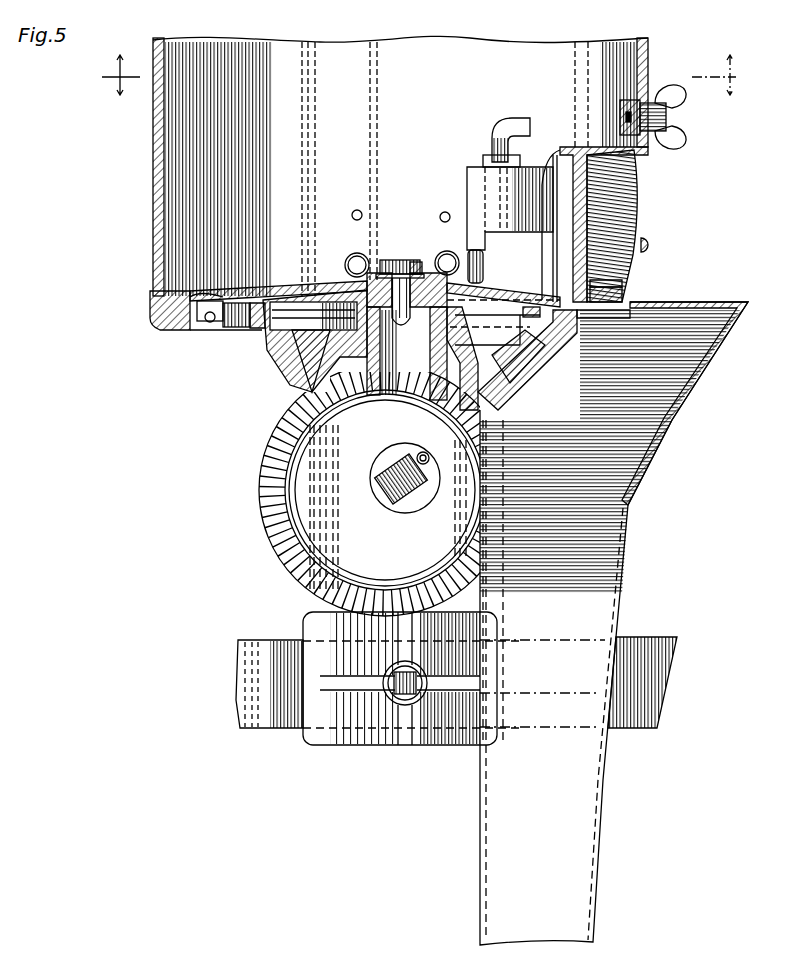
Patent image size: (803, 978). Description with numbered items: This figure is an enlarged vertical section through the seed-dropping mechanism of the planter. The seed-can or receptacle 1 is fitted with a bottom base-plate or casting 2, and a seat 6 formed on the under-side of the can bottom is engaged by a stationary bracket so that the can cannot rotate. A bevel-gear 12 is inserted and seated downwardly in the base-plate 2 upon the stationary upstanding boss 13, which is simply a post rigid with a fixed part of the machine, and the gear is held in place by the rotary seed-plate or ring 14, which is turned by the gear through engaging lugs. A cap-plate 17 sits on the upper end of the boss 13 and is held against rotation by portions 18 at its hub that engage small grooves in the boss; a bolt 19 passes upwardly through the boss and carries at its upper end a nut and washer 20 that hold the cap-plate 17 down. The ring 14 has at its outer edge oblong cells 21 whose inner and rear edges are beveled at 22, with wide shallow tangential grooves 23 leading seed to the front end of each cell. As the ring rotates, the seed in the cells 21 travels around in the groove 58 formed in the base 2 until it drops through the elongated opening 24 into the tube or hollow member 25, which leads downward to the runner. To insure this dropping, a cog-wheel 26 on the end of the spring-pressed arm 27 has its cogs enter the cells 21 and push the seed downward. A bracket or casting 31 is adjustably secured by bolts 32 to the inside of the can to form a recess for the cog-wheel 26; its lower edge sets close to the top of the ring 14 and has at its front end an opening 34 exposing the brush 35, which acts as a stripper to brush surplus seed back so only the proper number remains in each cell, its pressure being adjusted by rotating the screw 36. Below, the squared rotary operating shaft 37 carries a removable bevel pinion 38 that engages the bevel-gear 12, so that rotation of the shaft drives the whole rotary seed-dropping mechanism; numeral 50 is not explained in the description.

The seed-can or receptacle 1 is at (152, 144).
The base-plate or casting 2 is at (160, 315).
The seat 6 is at (419, 75).
The bevel-gear 12 is at (278, 300).
The boss 13 is at (425, 365).
The rotary seed-plate or ring 14 is at (240, 300).
The cap-plate 17 is at (268, 298).
The portions 18 is at (425, 268).
The bolt 19 is at (395, 268).
The nut and washer 20 is at (406, 258).
The cells 21 is at (165, 285).
The beveled edges 22 is at (615, 293).
The grooves 23 is at (215, 298).
The elongated opening 24 is at (590, 327).
The tube or hollow member 25 is at (626, 556).
The cog-wheel 26 is at (632, 208).
The arm 27 is at (650, 246).
The bracket or casting 31 is at (580, 160).
The bolts 32 is at (647, 100).
The opening 34 is at (485, 263).
The brush 35 is at (478, 268).
The screw 36 is at (516, 120).
The rotary operating shaft 37 is at (417, 498).
The bevel pinion 38 is at (362, 592).
The bracket piece 50 is at (578, 327).
The groove 58 is at (210, 322).